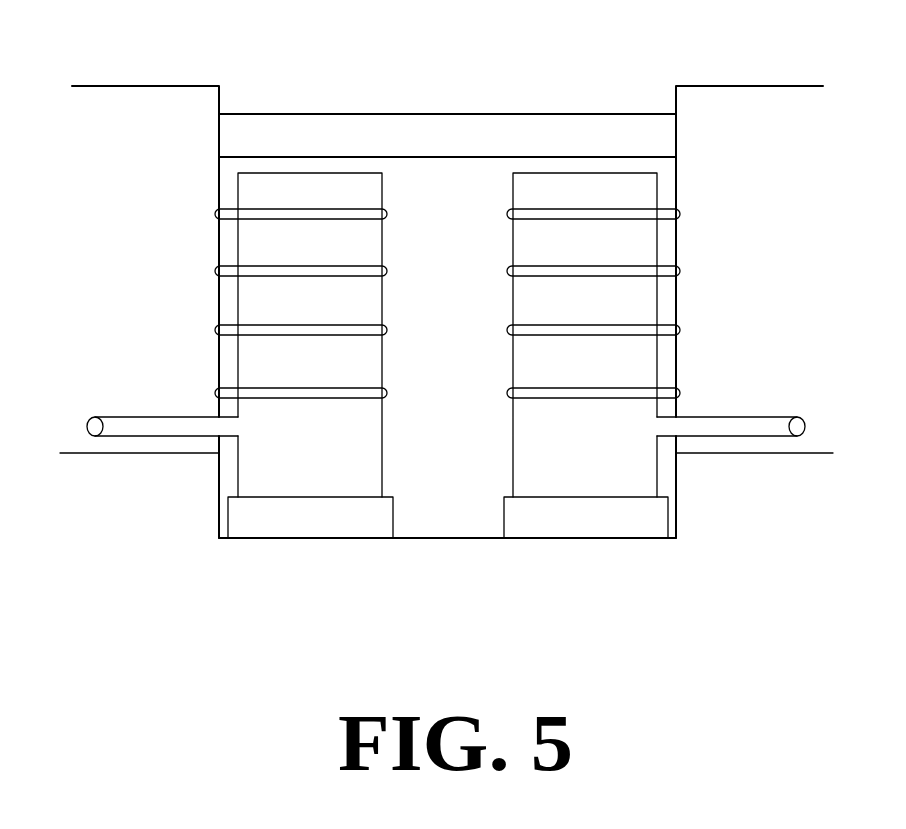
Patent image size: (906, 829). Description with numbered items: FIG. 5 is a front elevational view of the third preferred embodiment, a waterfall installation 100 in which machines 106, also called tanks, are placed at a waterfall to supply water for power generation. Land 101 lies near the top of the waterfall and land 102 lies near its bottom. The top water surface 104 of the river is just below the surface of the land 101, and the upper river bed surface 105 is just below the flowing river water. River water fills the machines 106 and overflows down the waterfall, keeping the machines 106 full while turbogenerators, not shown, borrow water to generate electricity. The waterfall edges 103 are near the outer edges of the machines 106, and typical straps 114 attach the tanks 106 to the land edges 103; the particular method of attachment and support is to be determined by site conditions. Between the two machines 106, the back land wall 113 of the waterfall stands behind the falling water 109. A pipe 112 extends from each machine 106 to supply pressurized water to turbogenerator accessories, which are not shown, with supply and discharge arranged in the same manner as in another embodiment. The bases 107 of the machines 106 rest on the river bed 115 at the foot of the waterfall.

The growing module 100 is at (318, 172).
The land 101 is at (112, 85).
The land 102 is at (113, 455).
The waterfall edges 103 is at (219, 300).
The top water surface 104 is at (440, 113).
The upper river bed surface 105 is at (443, 157).
The machines 106 is at (513, 192).
The bases 107 is at (307, 538).
The falling water 109 is at (443, 215).
The pipe 112 is at (157, 415).
The back land wall 113 is at (462, 407).
The straps 114 is at (215, 214).
The river bed 115 is at (447, 538).